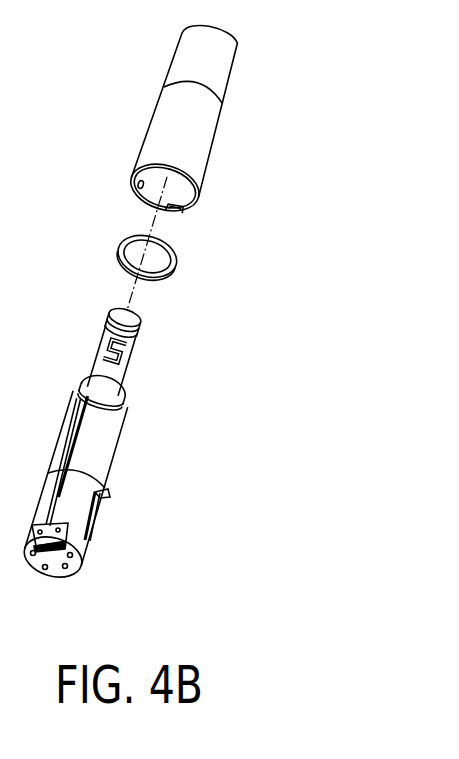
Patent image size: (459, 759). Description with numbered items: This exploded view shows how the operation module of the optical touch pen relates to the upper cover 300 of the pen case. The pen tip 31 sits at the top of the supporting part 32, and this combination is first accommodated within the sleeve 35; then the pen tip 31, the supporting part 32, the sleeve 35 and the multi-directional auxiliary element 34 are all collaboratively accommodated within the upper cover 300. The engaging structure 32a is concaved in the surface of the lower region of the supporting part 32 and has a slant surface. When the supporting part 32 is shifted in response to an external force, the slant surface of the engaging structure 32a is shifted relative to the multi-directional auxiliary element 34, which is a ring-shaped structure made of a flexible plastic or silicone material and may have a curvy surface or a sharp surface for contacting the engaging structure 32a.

The upper cover 300 is at (187, 125).
The multi-directional auxiliary element 34 is at (175, 265).
The pen tip 31 is at (128, 313).
The supporting part 32 is at (120, 342).
The engaging structure 32a is at (85, 392).
The sleeve 35 is at (95, 448).